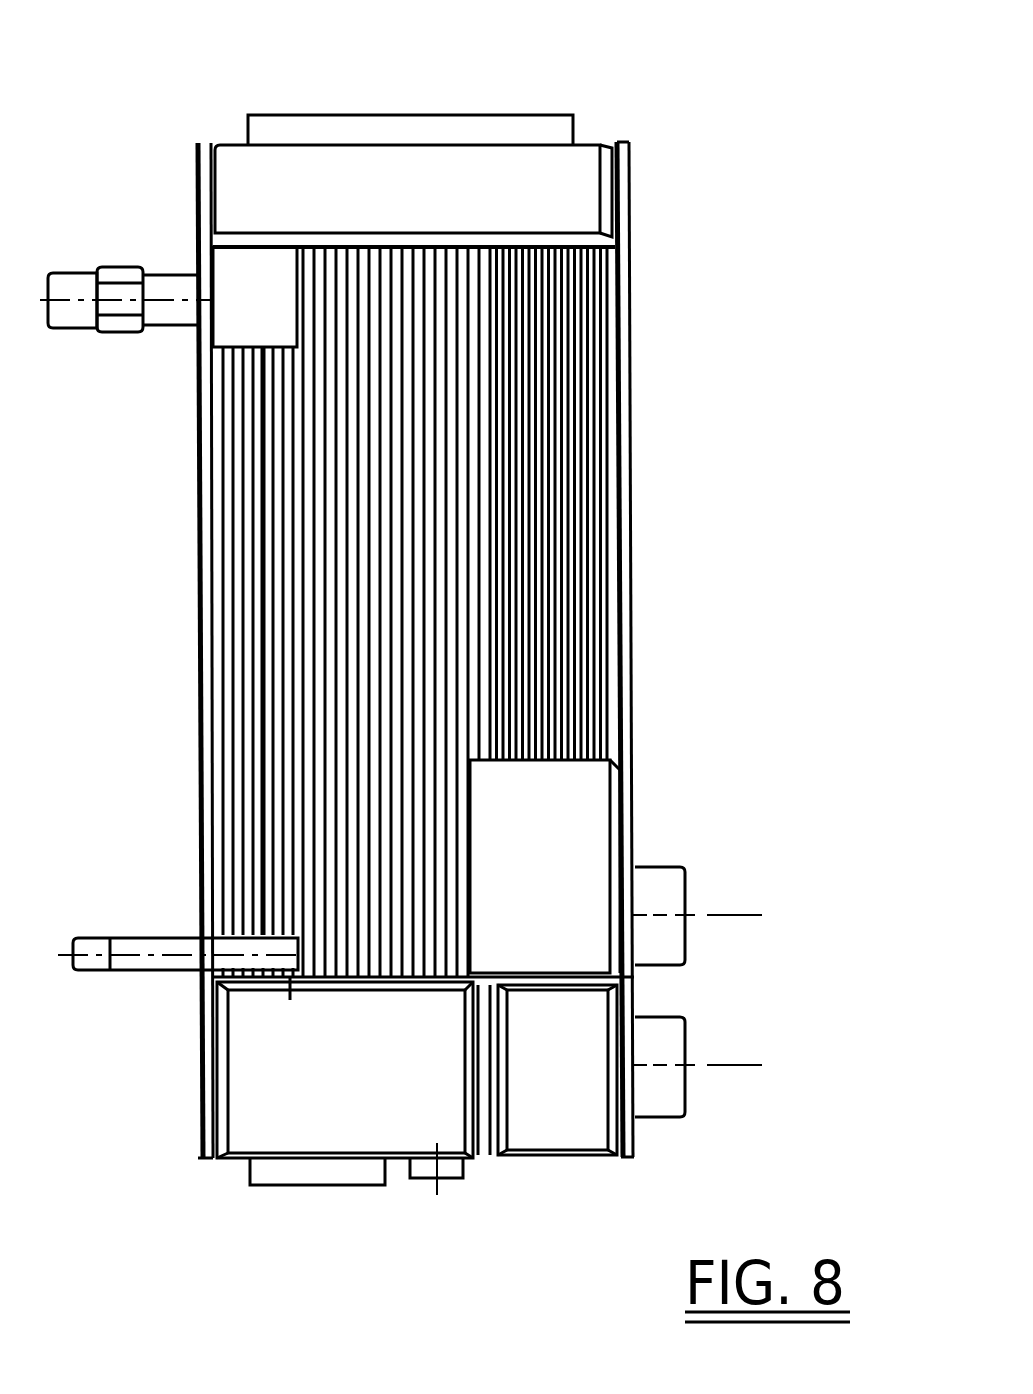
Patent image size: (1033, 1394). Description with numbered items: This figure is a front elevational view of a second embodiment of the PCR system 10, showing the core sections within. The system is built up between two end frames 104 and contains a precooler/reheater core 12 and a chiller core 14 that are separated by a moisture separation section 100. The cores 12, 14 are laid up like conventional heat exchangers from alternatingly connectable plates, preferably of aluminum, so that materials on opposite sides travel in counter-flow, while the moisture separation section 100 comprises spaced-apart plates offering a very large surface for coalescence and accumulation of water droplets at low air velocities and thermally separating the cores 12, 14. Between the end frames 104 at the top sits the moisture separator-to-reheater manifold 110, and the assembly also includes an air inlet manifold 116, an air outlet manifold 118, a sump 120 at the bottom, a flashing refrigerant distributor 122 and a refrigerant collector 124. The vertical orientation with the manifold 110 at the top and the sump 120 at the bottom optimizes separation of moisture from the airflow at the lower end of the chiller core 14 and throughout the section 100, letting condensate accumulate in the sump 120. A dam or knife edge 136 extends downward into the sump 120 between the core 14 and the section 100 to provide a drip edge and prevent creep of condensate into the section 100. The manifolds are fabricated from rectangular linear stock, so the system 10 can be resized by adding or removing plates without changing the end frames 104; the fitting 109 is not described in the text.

The PCR system 10 is at (687, 0).
The end frames 104 is at (197, 212).
The moisture separator-to-reheater manifold 110 is at (258, 170).
The refrigerant collector 124 is at (240, 318).
The chiller core 14 is at (247, 521).
The moisture separation section 100 is at (352, 598).
The precooler/reheater core 12 is at (538, 597).
The air outlet manifold 118 is at (590, 834).
The air inlet manifold 116 is at (570, 1125).
The sump 120 is at (293, 1120).
The drain fitting 109 is at (465, 1170).
The flashing refrigerant distributor 122 is at (178, 938).
The dam or knife edge 136 is at (292, 1000).